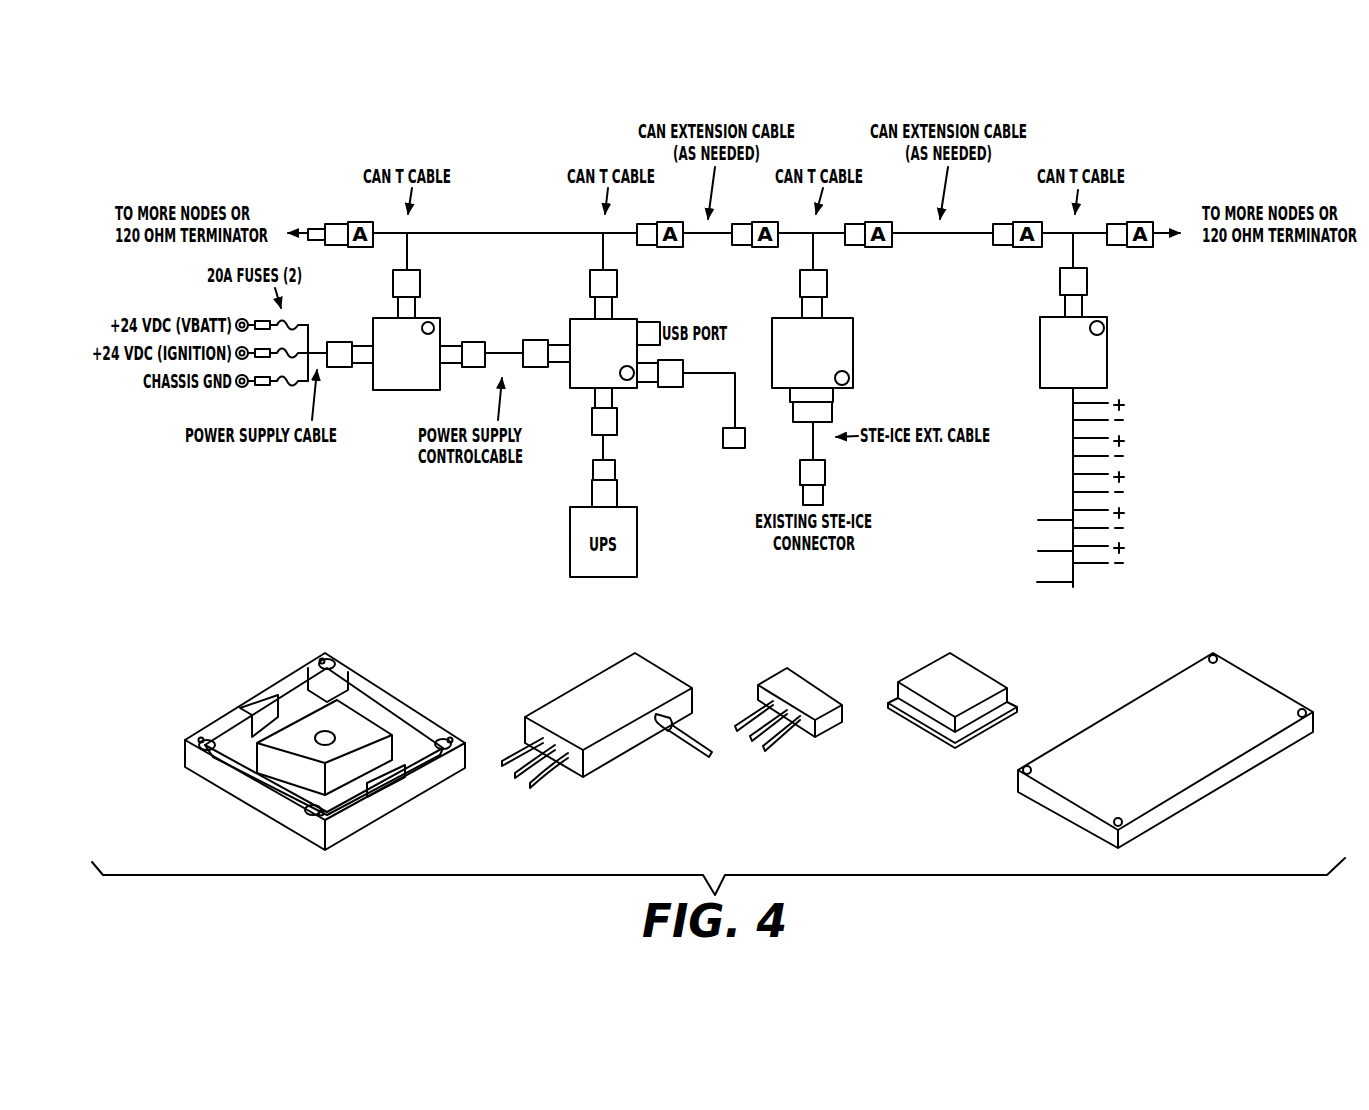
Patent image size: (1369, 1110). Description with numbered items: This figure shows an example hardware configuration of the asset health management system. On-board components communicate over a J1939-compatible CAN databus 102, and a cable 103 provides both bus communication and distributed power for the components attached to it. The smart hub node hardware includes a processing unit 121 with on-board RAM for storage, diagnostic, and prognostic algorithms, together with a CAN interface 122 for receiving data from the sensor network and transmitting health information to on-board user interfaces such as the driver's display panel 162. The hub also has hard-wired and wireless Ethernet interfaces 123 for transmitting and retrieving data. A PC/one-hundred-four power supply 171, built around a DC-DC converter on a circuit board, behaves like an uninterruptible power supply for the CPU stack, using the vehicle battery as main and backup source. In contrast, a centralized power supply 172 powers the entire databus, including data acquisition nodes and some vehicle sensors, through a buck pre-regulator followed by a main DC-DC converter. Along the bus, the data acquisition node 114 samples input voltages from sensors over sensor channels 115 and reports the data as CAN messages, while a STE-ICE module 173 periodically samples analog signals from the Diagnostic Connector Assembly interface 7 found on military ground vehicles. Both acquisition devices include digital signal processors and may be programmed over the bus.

The databus 102 is at (570, 131).
The cable 103 is at (503, 232).
The CAN interface 122 is at (608, 310).
The PC/104 power supply 171 is at (578, 402).
The processing unit (CPU) 121 is at (623, 390).
The Ethernet interfaces 123 is at (697, 430).
The power supply 172 is at (383, 390).
The STE-ICE module 173 is at (848, 352).
The Diagnostic Connector Assembly (DCA) interface 7 is at (818, 473).
The data acquisition node (DAQ) 114 is at (1102, 352).
The sensor channels 115 is at (1264, 380).
The driver's display panel 162 is at (1178, 680).